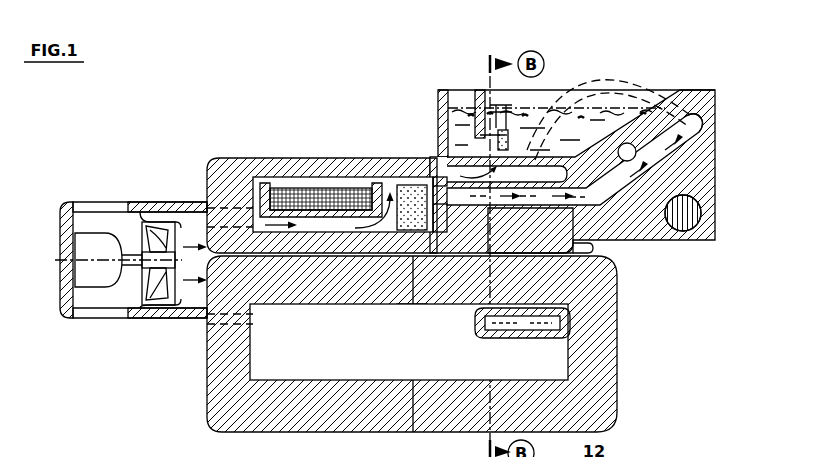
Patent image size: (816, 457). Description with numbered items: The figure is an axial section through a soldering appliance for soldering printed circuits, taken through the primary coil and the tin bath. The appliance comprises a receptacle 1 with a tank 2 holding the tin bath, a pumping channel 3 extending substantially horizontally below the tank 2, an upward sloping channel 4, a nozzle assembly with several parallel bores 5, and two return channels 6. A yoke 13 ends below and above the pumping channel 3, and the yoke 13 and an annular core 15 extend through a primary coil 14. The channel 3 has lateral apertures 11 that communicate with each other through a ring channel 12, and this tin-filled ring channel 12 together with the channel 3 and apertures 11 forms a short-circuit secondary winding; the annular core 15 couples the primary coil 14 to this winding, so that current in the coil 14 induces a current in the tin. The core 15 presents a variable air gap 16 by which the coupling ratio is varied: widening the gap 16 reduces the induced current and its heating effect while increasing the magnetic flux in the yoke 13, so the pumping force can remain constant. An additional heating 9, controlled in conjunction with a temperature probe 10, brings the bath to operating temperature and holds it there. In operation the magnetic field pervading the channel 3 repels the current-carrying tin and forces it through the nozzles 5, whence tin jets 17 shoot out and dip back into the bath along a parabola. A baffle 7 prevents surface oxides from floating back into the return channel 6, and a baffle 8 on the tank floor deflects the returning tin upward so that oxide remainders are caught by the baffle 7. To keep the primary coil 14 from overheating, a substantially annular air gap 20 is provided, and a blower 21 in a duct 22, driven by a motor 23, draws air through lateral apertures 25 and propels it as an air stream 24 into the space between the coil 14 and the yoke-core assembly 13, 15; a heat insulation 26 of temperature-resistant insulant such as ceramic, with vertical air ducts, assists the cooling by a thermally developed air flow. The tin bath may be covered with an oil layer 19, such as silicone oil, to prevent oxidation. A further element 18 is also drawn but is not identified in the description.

The receptacle 1 is at (438, 125).
The tank 2 is at (607, 132).
The pumping channel 3 is at (605, 205).
The upward sloping channel 4 is at (672, 150).
The parallel bores 5 is at (686, 92).
The return channels 6 is at (438, 177).
The baffle 7 is at (472, 100).
The baffle 8 is at (502, 127).
The additional heating 9 is at (680, 212).
The temperature probe 10 is at (620, 147).
The lateral apertures 11 is at (588, 240).
The ring channel 12 is at (540, 326).
The yoke 13 is at (285, 165).
The primary coil 14 is at (268, 158).
The annular core 15 is at (230, 383).
The variable air gap 16 is at (408, 432).
The tin jets 17 is at (631, 56).
The liquid level 18 is at (632, 112).
The oil layer 19 is at (649, 112).
The annular air gap 20 is at (320, 218).
The blower 21 is at (153, 290).
The duct 22 is at (134, 224).
The motor 23 is at (90, 273).
The air stream 24 is at (153, 210).
The lateral apertures 25 is at (88, 208).
The heat insulation 26 is at (410, 190).